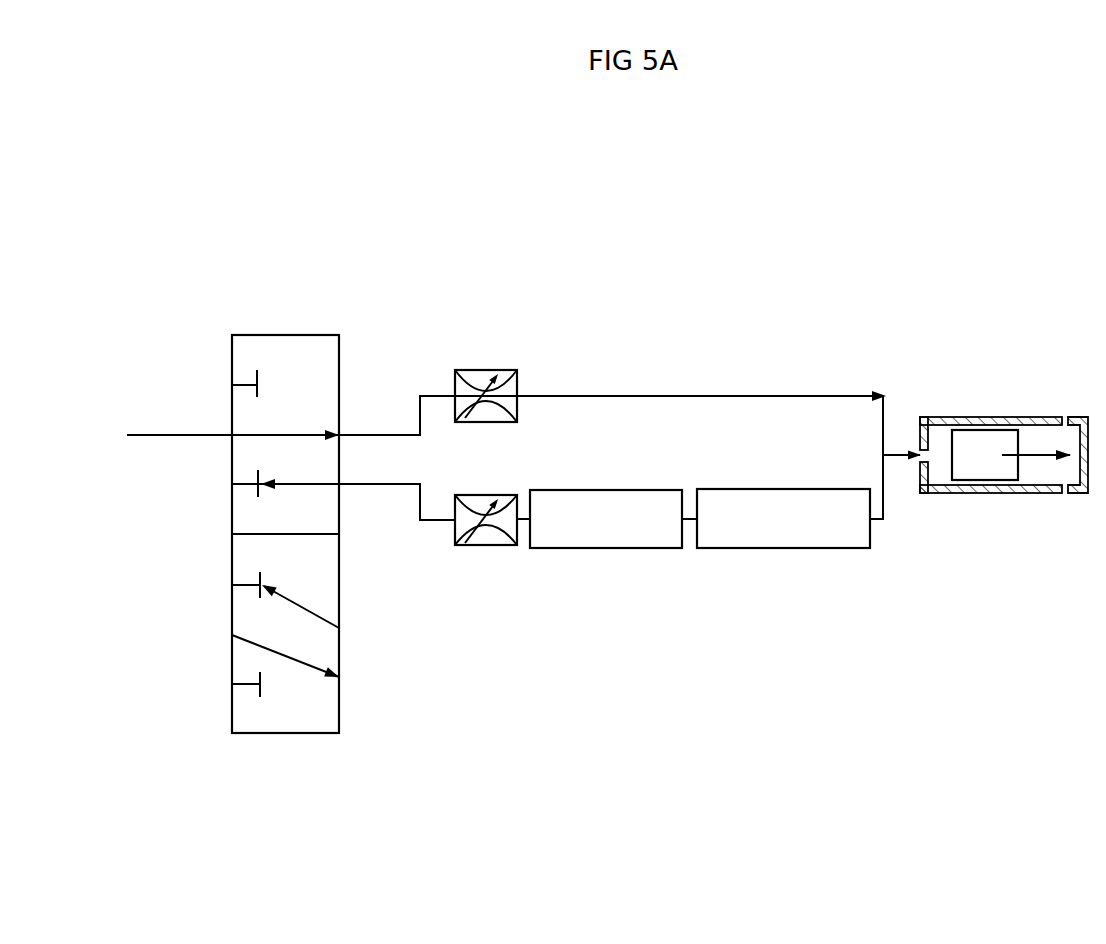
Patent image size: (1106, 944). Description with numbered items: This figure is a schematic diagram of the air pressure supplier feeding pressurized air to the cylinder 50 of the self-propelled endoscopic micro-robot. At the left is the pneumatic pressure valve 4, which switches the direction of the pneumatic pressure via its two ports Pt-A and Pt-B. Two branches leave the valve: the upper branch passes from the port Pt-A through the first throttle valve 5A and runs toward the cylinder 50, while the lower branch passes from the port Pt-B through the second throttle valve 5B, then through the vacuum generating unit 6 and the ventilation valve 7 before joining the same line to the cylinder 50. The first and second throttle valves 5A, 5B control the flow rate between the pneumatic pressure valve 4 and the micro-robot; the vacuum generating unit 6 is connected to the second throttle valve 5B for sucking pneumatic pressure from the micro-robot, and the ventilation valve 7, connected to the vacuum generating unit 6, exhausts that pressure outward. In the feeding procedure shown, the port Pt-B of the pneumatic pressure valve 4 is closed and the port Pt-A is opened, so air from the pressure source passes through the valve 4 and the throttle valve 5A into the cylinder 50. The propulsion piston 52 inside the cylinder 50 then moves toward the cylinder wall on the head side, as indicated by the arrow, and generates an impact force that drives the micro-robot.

The pneumatic pressure valve 4 is at (290, 722).
The port Pt-A is at (339, 433).
The port Pt-B is at (339, 484).
The first throttle valve 5A is at (483, 377).
The second throttle valve 5B is at (488, 540).
The vacuum generating unit 6 is at (660, 542).
The ventilation valve 7 is at (843, 542).
The cylinder 50 is at (1052, 418).
The propulsion piston 52 is at (992, 472).